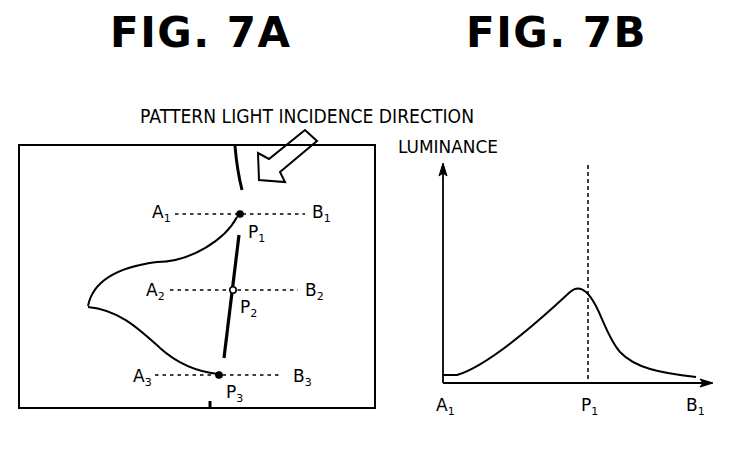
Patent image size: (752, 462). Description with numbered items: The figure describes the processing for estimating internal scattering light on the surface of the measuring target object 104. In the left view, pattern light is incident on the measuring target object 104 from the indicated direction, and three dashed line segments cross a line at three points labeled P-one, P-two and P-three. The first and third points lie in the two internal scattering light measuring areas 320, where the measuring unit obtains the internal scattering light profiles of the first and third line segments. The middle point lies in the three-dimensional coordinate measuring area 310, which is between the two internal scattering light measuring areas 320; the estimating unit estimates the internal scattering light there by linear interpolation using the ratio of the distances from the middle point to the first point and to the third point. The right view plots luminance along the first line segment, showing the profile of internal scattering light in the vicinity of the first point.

The measuring target object 104 is at (69, 160).
The three-dimensional coordinate measuring area 310 is at (230, 328).
The internal scattering light measuring areas 320 is at (142, 295).